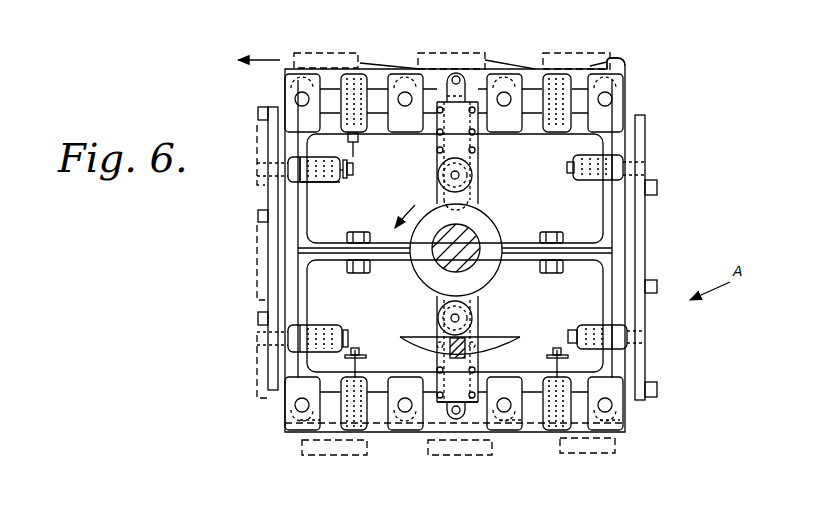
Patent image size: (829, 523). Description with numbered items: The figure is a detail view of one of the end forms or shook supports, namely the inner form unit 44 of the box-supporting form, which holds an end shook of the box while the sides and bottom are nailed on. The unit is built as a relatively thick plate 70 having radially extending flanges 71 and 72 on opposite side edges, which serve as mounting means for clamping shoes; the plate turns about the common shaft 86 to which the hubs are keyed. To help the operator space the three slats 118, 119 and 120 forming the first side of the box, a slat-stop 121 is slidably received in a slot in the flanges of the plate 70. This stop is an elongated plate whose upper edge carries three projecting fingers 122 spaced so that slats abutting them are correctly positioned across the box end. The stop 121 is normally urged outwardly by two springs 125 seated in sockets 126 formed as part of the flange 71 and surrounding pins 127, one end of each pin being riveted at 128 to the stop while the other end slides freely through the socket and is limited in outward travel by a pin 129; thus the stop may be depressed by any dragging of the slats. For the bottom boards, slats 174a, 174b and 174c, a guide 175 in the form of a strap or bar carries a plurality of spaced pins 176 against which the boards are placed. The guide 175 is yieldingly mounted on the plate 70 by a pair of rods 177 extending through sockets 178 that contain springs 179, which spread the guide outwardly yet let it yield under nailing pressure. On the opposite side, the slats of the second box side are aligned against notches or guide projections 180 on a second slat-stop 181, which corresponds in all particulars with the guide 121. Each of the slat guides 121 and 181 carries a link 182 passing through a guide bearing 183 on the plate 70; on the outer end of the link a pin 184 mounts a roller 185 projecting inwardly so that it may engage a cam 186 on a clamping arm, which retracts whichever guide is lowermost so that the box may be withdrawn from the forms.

The plate 70 is at (598, 224).
The flange 71 is at (623, 98).
The flange 72 is at (627, 428).
The shaft 86 is at (468, 237).
The slat 118 is at (580, 53).
The slat 119 is at (437, 53).
The slat 120 is at (310, 53).
The slat-stop 121 is at (621, 70).
The projecting fingers 122 is at (360, 63).
The springs 125 is at (356, 142).
The sockets 126 is at (327, 152).
The pins 127 is at (354, 150).
The rivet 128 is at (352, 74).
The pin 129 is at (352, 165).
The slat 174a is at (257, 362).
The slat 174b is at (257, 278).
The slat 174c is at (257, 170).
The guide 175 is at (270, 250).
The pins 176 is at (258, 112).
The rods 177 is at (349, 172).
The sockets 178 is at (318, 182).
The springs 179 is at (335, 186).
The guide projections 180 is at (298, 436).
The slat-stop 181 is at (482, 418).
The link 182 is at (466, 94).
The guide bearing 183 is at (475, 146).
The pin 184 is at (460, 175).
The roller 185 is at (438, 174).
The cam 186 is at (508, 340).
The inner form unit 44 is at (655, 134).